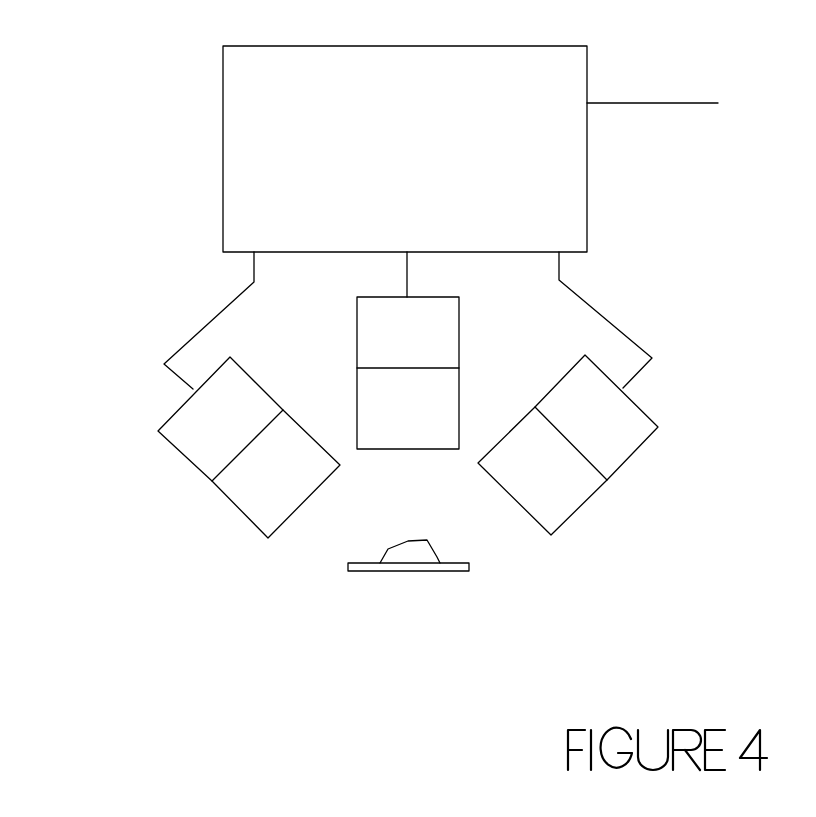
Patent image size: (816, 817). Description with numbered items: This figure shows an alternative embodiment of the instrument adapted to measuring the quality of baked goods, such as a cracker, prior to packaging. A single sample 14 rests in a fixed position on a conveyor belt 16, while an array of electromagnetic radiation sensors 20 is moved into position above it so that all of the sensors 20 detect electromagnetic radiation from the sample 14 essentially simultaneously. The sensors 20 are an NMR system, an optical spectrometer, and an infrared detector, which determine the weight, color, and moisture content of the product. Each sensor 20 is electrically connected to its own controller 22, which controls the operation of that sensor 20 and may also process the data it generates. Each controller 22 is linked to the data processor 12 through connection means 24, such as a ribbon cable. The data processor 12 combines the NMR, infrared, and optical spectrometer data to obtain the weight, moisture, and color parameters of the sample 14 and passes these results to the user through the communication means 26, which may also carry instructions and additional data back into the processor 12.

The data processor 12 is at (223, 127).
The sample 14 is at (418, 540).
The conveyor belt 16 is at (463, 572).
The electromagnetic radiation sensor 20 is at (567, 518).
The controller 22 is at (620, 467).
The connection means 24 is at (617, 327).
The communication means 26 is at (623, 103).